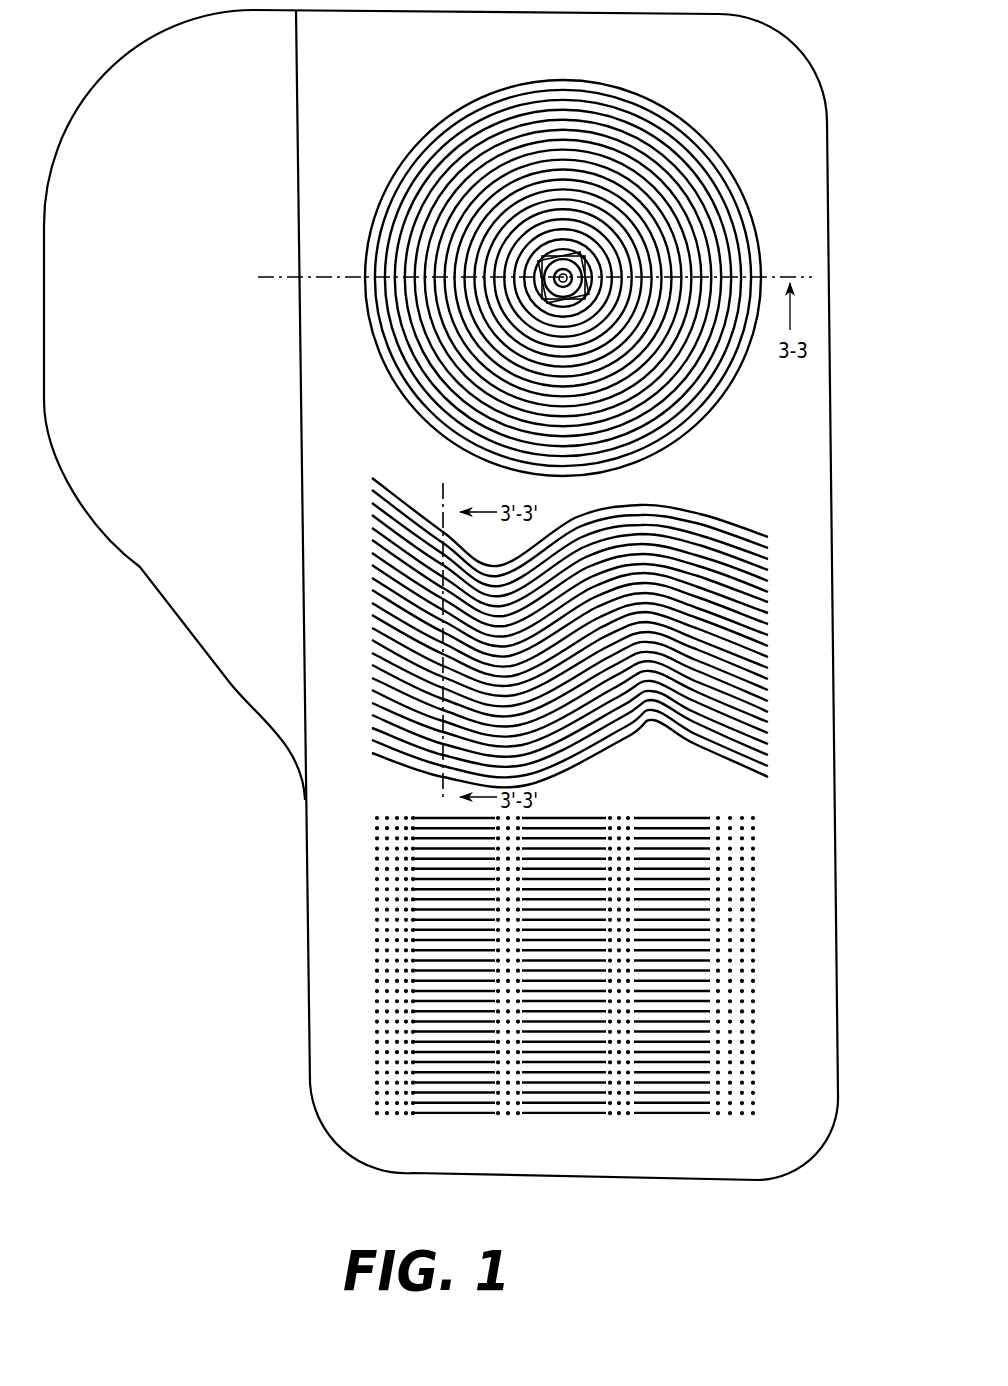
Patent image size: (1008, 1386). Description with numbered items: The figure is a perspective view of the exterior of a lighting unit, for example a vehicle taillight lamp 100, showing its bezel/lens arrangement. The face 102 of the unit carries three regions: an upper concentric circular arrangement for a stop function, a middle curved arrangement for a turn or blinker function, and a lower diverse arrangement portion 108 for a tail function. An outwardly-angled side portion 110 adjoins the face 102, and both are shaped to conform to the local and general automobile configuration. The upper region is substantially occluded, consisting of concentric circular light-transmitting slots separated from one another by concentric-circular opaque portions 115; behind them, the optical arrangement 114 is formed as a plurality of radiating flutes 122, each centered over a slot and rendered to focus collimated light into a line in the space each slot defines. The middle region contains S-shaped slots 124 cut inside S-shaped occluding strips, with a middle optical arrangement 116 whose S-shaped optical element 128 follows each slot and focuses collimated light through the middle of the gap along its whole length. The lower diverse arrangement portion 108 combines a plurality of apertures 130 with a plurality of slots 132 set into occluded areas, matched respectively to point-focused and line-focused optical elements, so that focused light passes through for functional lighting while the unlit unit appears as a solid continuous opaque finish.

The lamp 100 is at (205, 935).
The face 102 is at (337, 797).
The lower diverse arrangement portion 108 is at (603, 937).
The outwardly-angled side portion 110 is at (210, 340).
The optical arrangement 114 is at (533, 251).
The concentric-circular opaque portions 115 is at (401, 191).
The middle optical arrangement 116 is at (627, 618).
The radiating flutes 122 is at (500, 101).
The S-shaped slots 124 is at (757, 540).
The S-shaped optical element 128 is at (768, 577).
The apertures 130 is at (748, 833).
The slots 132 is at (713, 876).